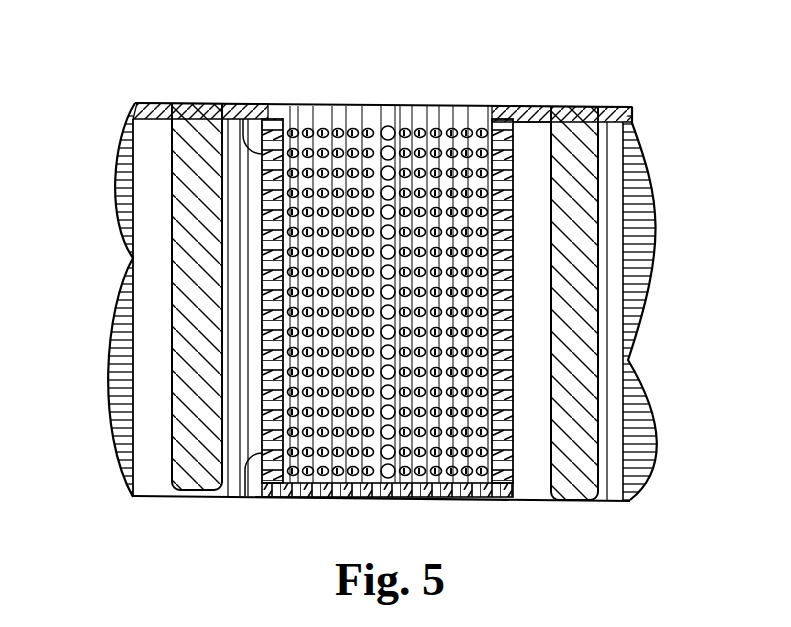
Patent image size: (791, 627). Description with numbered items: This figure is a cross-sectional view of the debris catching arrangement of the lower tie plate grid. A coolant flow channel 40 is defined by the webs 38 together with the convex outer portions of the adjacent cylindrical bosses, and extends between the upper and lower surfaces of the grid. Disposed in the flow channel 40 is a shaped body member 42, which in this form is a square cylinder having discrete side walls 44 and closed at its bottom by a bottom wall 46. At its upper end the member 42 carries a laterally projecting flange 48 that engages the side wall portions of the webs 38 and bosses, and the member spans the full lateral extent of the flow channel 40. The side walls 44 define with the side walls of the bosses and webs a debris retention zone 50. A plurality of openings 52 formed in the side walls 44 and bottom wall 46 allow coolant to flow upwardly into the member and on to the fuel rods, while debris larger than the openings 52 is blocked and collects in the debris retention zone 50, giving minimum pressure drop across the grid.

The web 38 is at (585, 180).
The coolant flow channel 40 is at (180, 266).
The shaped body member 42 is at (248, 497).
The side wall 44 is at (252, 119).
The bottom wall 46 is at (450, 501).
The laterally projecting flange 48 is at (531, 106).
The debris retention zone 50 is at (247, 193).
The opening 52 is at (350, 130).